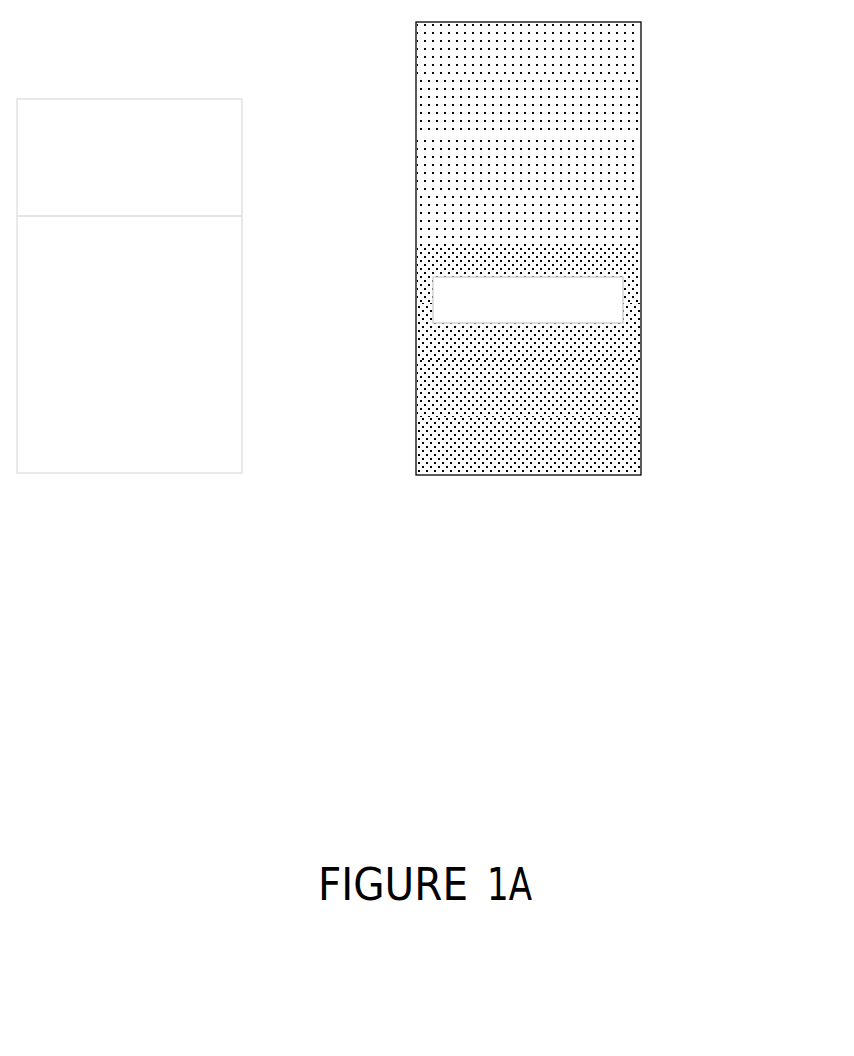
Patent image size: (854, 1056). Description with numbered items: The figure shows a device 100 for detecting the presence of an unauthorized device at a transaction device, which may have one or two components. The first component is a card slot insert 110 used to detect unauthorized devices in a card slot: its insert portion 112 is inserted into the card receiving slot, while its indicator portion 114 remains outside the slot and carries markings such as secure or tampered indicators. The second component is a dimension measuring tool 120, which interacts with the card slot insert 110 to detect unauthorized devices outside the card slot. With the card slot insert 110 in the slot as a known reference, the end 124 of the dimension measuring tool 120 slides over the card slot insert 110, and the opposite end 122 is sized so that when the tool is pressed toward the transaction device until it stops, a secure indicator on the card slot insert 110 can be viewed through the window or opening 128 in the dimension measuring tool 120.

The device 100 is at (693, 700).
The card slot insert 110 is at (255, 512).
The insert portion 112 is at (223, 155).
The indicator portion 114 is at (223, 343).
The dimension measuring tool 120 is at (660, 512).
The end 122 is at (623, 130).
The end 124 is at (623, 400).
The window or opening 128 is at (605, 305).